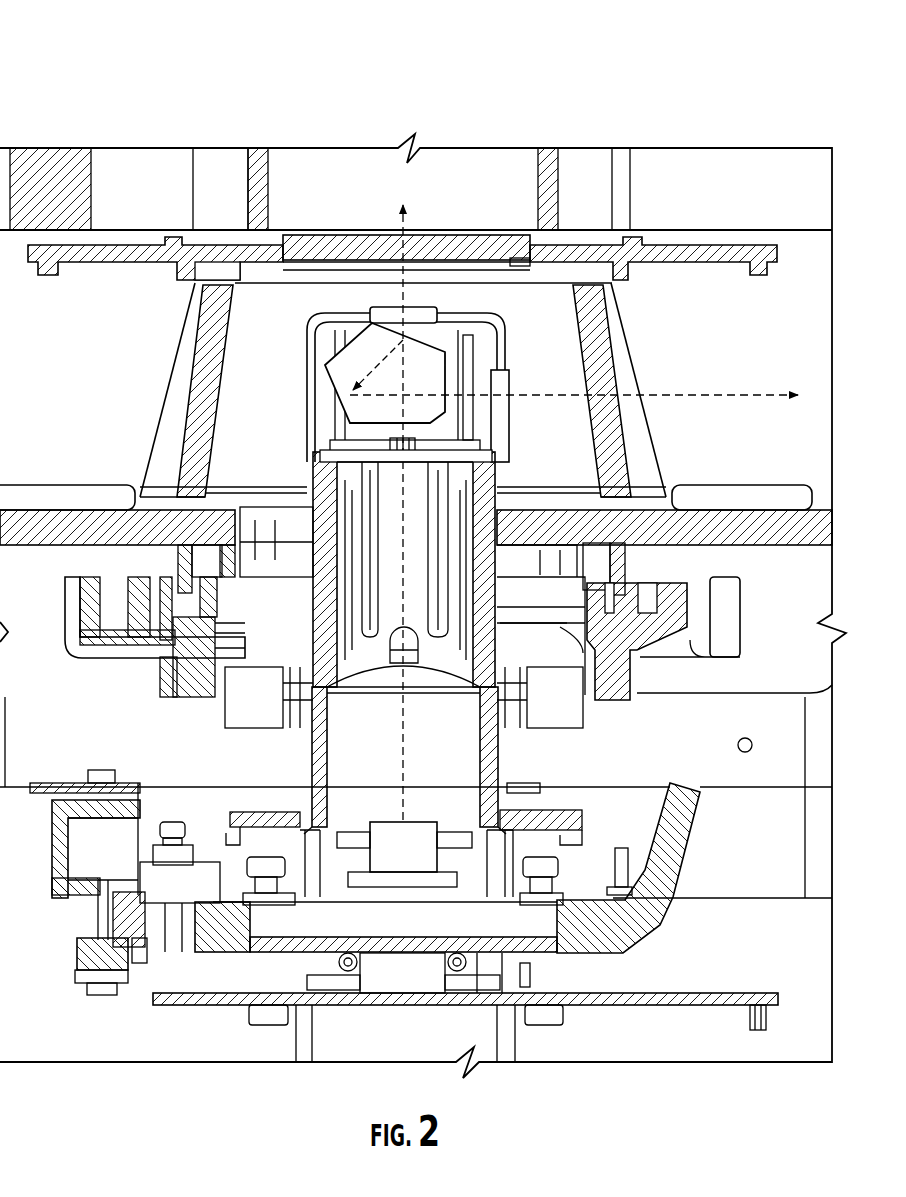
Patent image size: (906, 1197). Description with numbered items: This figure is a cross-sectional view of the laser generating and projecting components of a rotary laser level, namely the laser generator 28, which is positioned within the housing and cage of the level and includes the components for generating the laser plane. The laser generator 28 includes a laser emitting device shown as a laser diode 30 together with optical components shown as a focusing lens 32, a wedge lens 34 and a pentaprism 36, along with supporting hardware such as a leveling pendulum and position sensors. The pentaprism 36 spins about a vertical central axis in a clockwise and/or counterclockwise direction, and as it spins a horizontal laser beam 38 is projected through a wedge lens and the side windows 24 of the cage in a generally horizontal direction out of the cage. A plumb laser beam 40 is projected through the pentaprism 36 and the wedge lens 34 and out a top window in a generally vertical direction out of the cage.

The laser generator 28 is at (423, 606).
The side windows 24 is at (530, 252).
The plumb laser beam 40 is at (403, 250).
The wedge lens 34 is at (380, 305).
The pentaprism 36 is at (322, 365).
The horizontal laser beam 38 is at (705, 395).
The focusing lens 32 is at (318, 698).
The laser diode 30 is at (381, 816).